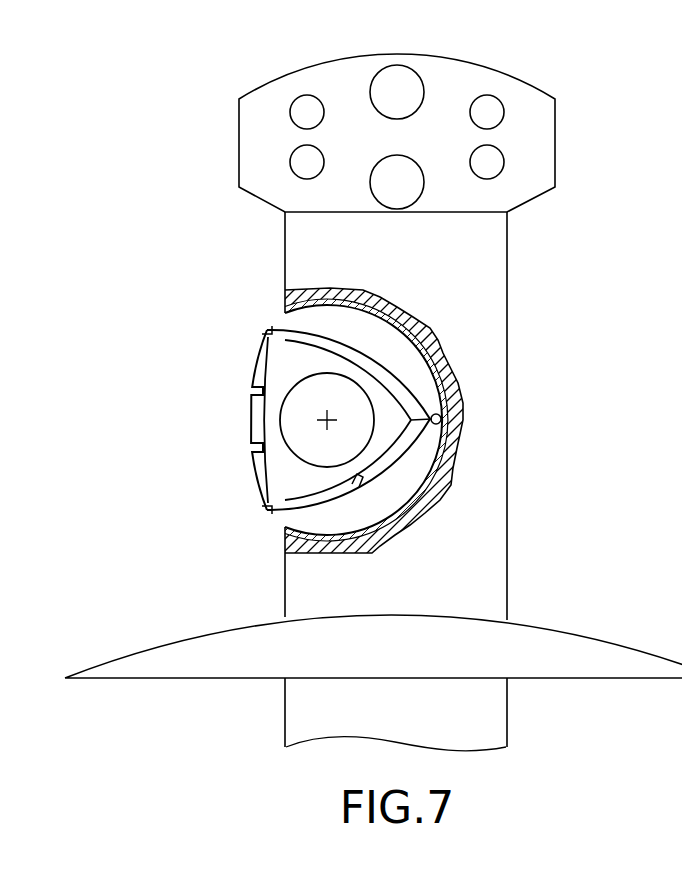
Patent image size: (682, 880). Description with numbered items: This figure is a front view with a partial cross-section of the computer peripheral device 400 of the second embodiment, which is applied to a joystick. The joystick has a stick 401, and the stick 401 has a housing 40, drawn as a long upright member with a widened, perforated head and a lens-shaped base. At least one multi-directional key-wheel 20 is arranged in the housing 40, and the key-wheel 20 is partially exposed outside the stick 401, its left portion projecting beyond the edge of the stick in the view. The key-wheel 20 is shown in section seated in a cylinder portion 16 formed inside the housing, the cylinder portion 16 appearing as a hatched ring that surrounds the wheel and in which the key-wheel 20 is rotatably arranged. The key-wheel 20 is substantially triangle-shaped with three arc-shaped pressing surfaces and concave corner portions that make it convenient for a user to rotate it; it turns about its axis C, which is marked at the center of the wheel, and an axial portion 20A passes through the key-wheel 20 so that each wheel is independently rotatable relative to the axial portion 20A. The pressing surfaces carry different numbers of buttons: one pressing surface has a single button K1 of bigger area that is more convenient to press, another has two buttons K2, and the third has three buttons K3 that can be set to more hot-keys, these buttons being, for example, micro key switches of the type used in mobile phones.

The computer peripheral device 400 is at (665, 49).
The housing 40 is at (286, 230).
The stick 401 is at (507, 232).
The cylinder portion 16 is at (452, 390).
The multi-directional key-wheel 20 is at (255, 352).
The axial portion 20A is at (269, 508).
The axis C is at (327, 420).
The button K1 is at (365, 362).
The buttons K2 is at (337, 490).
The buttons K3 is at (252, 363).